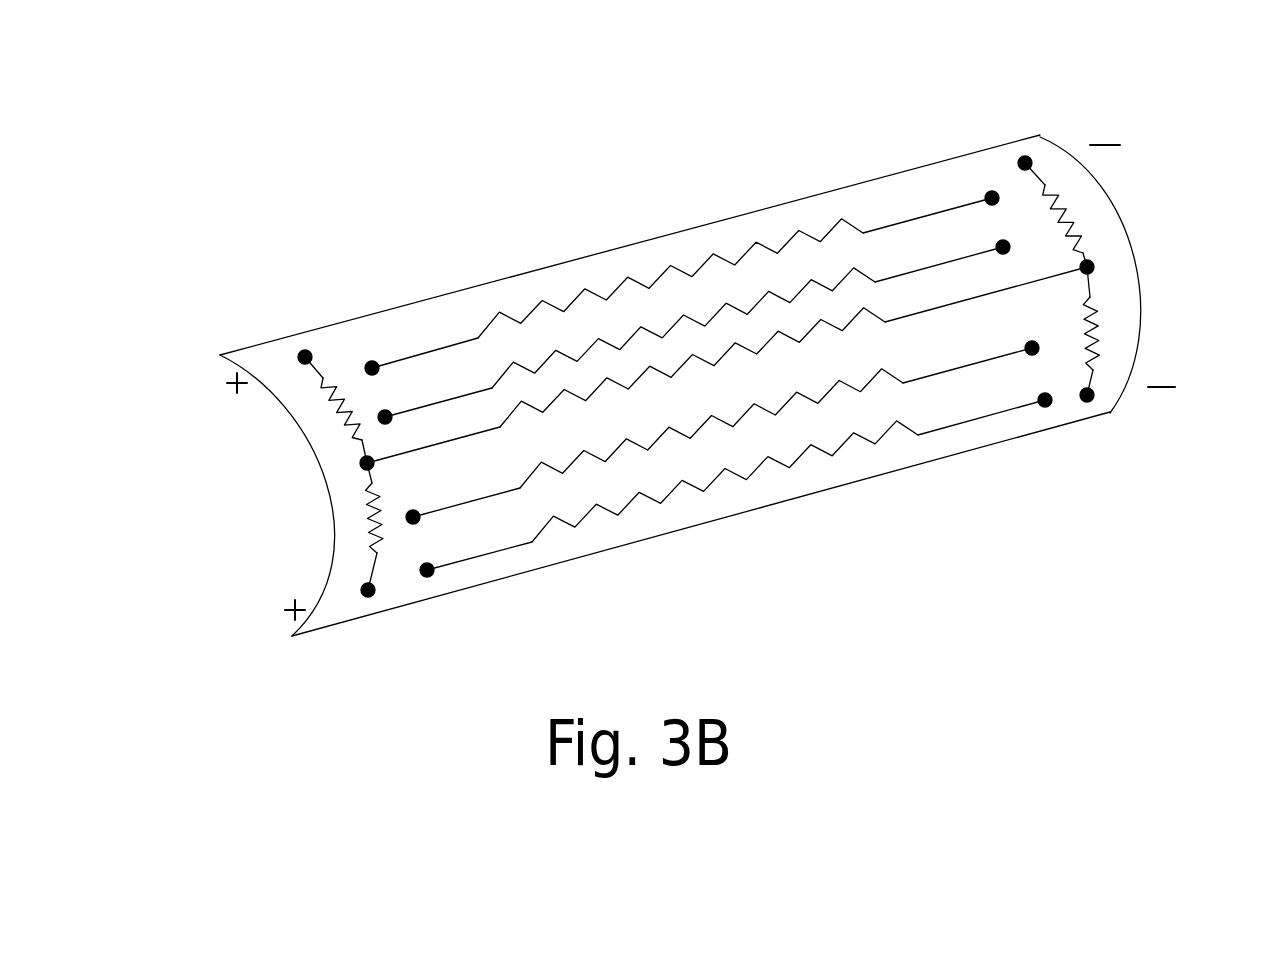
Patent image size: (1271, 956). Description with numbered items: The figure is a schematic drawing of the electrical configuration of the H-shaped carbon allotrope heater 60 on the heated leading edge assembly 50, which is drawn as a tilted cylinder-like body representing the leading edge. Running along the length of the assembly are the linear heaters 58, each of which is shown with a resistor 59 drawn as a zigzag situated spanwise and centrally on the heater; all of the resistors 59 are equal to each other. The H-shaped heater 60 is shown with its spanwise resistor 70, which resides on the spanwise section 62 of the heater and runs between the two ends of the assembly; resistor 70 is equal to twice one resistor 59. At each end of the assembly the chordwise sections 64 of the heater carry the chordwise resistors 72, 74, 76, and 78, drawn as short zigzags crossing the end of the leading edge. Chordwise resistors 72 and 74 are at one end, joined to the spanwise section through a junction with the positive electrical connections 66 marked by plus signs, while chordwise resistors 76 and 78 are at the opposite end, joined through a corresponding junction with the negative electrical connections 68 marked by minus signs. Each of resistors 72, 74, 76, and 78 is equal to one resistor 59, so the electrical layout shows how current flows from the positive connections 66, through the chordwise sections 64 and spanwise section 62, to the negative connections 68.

The heated leading edge assembly 50 is at (697, 324).
The linear heaters 58 is at (420, 350).
The resistors 59 is at (583, 288).
The H-shaped heater 60 is at (1104, 262).
The spanwise section 62 is at (413, 453).
The chordwise sections 64 is at (362, 454).
The positive electrical connections 66 is at (306, 355).
The negative electrical connections 68 is at (1026, 162).
The spanwise resistor 70 is at (786, 335).
The chordwise resistor 72 is at (347, 398).
The chordwise resistor 74 is at (377, 530).
The chordwise resistor 76 is at (1070, 210).
The chordwise resistor 78 is at (1096, 330).